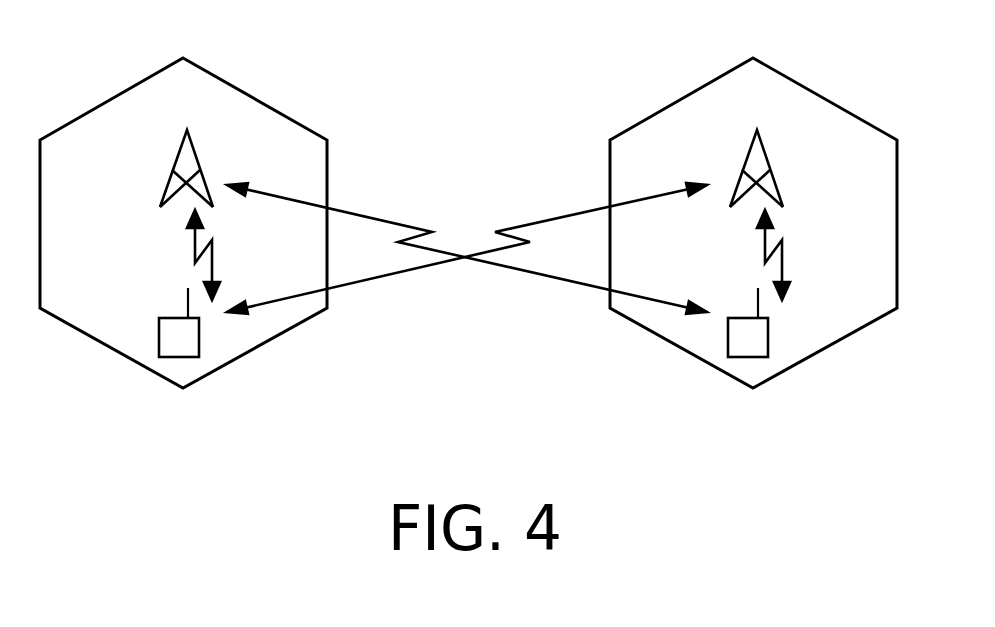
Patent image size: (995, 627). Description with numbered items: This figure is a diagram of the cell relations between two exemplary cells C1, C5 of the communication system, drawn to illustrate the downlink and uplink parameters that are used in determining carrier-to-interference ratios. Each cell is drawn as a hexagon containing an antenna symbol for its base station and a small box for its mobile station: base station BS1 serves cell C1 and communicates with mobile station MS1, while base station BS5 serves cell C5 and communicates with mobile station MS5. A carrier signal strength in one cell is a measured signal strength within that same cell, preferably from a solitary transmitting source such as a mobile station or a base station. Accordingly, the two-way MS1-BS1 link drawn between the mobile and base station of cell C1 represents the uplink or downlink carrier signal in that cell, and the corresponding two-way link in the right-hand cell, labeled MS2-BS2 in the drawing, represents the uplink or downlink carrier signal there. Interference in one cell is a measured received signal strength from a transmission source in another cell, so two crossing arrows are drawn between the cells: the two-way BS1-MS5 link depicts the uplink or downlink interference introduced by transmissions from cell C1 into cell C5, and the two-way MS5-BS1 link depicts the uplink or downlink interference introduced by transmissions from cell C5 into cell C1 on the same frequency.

The cell C1 is at (183, 197).
The cell C5 is at (753, 197).
The base station BS1 is at (221, 165).
The base station BS5 is at (790, 165).
The mobile station MS1 is at (185, 357).
The mobile station MS5 is at (755, 357).
The two-way link MS1-BS1 is at (162, 240).
The radio link between MS2 and BS2 MS2-BS2 is at (800, 239).
The two-way link MS5-BS1 is at (467, 240).
The two-way link BS1-MS5 is at (467, 259).